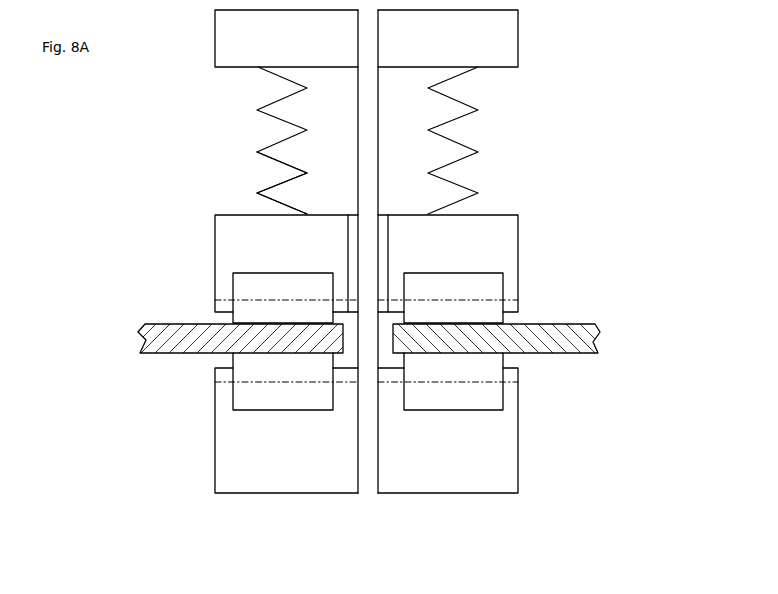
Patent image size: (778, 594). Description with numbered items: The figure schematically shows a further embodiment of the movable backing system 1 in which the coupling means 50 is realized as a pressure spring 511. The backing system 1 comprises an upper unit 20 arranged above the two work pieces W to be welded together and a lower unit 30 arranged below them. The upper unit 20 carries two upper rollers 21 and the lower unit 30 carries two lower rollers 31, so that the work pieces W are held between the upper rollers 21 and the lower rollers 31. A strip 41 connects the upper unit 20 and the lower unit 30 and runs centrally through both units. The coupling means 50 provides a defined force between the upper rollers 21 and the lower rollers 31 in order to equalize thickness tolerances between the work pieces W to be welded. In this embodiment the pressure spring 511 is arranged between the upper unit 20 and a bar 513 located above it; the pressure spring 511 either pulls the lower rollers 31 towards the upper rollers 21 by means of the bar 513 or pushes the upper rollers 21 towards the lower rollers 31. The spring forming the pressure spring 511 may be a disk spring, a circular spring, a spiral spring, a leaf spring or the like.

The movable backing system 1 is at (609, 70).
The upper unit 20 is at (240, 237).
The upper rollers 21 is at (267, 290).
The lower unit 30 is at (315, 430).
The lower rollers 31 is at (546, 384).
The strip 41 is at (367, 158).
The coupling means 50 is at (303, 140).
The pressure spring 511 is at (217, 176).
The bar 513 is at (487, 40).
The work pieces W is at (170, 335).